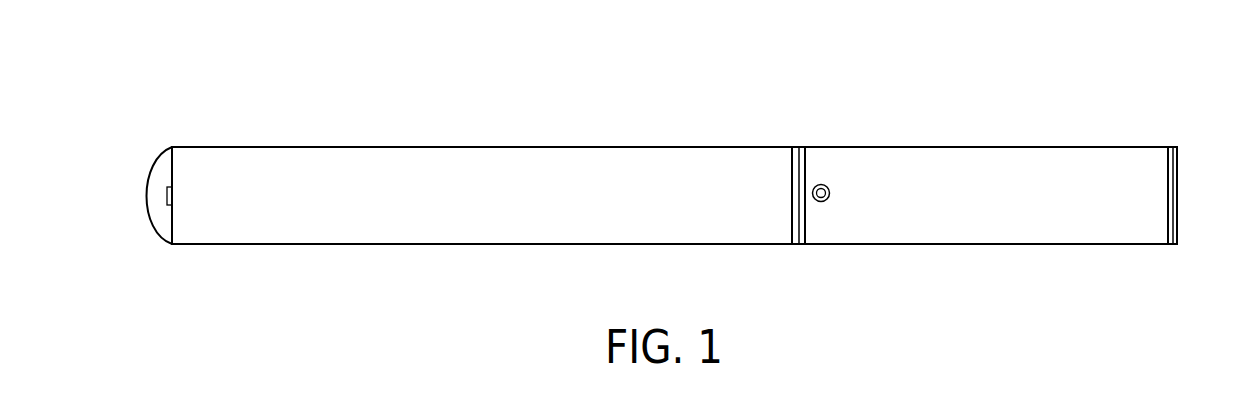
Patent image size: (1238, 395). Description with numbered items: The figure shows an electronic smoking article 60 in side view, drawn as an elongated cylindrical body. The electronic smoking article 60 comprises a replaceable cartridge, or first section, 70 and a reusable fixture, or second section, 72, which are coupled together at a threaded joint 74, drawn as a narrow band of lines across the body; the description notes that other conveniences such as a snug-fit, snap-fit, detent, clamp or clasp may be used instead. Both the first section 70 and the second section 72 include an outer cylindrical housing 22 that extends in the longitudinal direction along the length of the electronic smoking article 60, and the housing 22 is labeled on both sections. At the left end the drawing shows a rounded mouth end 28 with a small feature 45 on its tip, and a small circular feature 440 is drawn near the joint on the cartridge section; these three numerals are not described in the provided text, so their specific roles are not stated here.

The outer cylindrical housing 22 is at (382, 245).
The mouth end 28 is at (185, 136).
The mouthpiece opening 45 is at (166, 196).
The electronic smoking article 60 is at (884, 136).
The replaceable cartridge 70 is at (1020, 147).
The reusable fixture 72 is at (737, 147).
The threaded joint 74 is at (796, 246).
The indicator light 440 is at (831, 193).